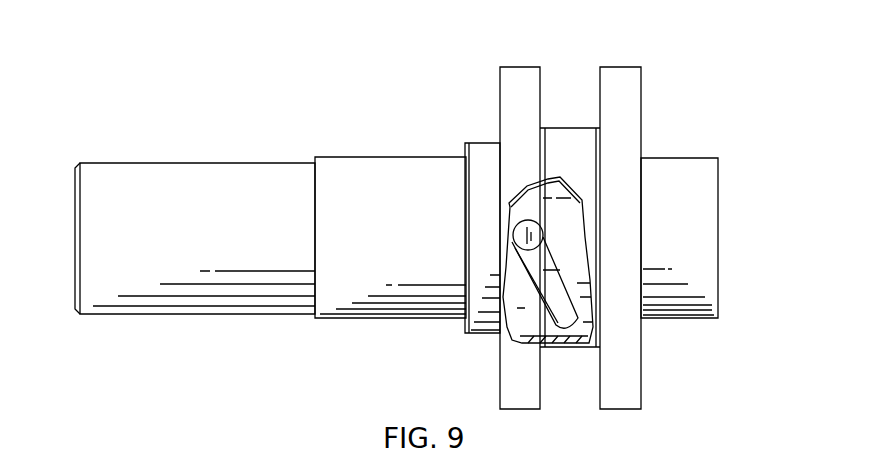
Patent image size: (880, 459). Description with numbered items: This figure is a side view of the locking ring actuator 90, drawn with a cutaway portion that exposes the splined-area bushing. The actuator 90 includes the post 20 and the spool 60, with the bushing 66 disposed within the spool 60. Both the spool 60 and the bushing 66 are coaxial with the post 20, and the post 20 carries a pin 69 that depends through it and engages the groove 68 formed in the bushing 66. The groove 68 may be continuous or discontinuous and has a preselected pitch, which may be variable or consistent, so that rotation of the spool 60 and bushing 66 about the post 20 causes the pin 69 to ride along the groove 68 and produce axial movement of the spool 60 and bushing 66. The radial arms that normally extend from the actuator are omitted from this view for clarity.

The locking ring actuator 90 is at (373, 52).
The post 20 is at (678, 180).
The spool 60 is at (652, 377).
The bushing 66 is at (577, 283).
The groove 68 is at (530, 297).
The pin 69 is at (528, 232).